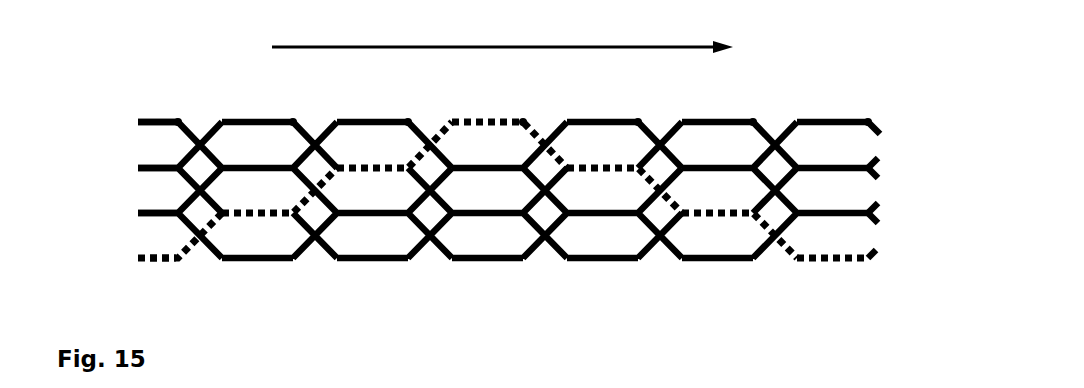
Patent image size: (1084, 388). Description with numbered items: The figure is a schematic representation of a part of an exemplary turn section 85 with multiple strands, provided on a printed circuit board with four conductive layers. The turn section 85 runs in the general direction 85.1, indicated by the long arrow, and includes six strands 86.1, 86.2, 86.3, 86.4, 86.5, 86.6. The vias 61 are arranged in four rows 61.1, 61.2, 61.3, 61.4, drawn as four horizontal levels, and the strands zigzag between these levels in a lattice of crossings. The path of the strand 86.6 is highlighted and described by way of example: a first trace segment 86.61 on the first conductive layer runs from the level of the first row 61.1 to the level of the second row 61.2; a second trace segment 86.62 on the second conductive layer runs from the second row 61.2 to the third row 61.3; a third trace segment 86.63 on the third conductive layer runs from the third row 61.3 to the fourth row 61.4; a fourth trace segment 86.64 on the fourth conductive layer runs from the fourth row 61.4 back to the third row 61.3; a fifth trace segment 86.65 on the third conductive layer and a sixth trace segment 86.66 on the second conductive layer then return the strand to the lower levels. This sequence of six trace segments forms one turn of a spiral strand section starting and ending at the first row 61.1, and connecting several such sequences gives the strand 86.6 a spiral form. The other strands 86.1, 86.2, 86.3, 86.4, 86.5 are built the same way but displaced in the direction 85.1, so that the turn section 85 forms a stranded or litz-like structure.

The vias 61 is at (178, 101).
The first row 61.1 is at (127, 258).
The second row 61.2 is at (127, 213).
The third row 61.3 is at (127, 168).
The fourth row 61.4 is at (127, 122).
The turn section 85 is at (898, 78).
The general direction 85.1 is at (610, 45).
The strand 86.1 is at (879, 130).
The strand 86.2 is at (879, 160).
The strand 86.3 is at (880, 178).
The strand 86.4 is at (879, 207).
The strand 86.5 is at (879, 226).
The strand 86.6 is at (878, 256).
The first trace segment 86.61 is at (207, 227).
The second trace segment 86.62 is at (323, 183).
The third trace segment 86.63 is at (436, 140).
The fourth trace segment 86.64 is at (551, 150).
The fifth trace segment 86.65 is at (667, 197).
The sixth trace segment 86.66 is at (783, 244).